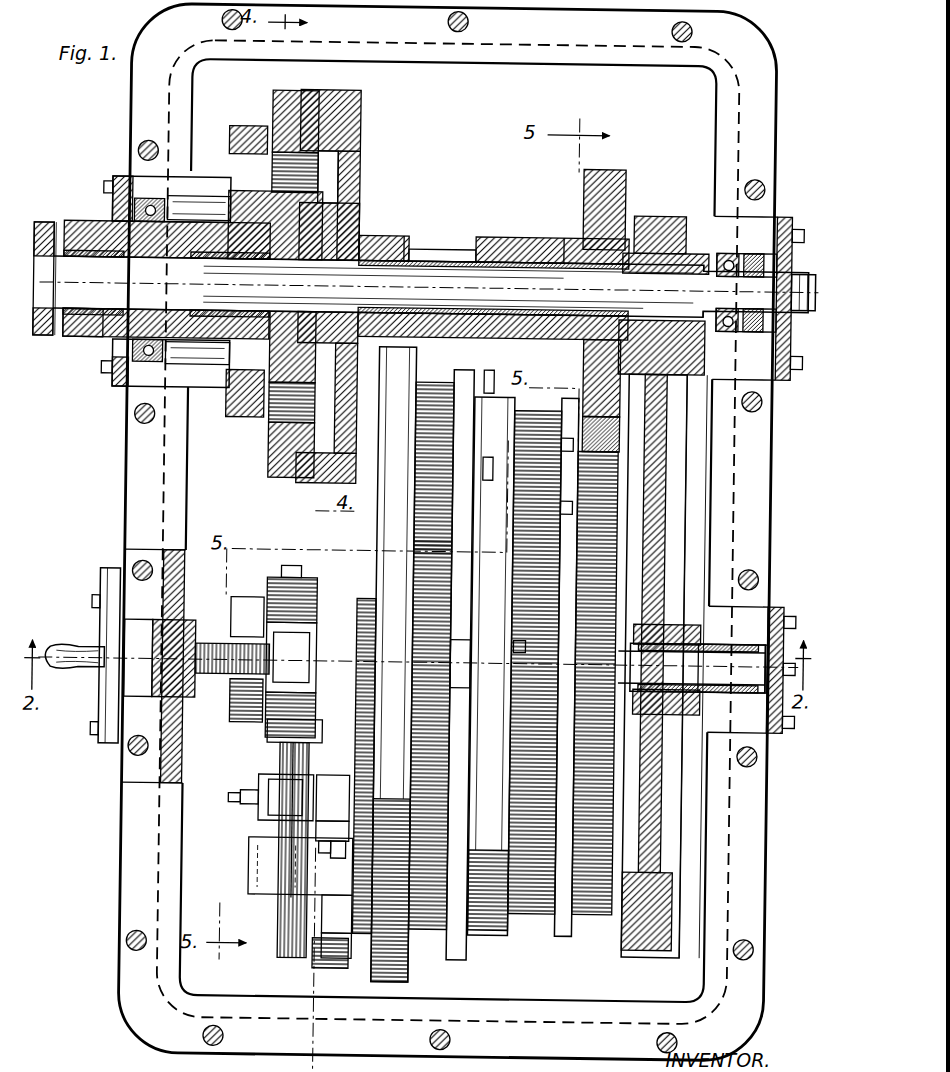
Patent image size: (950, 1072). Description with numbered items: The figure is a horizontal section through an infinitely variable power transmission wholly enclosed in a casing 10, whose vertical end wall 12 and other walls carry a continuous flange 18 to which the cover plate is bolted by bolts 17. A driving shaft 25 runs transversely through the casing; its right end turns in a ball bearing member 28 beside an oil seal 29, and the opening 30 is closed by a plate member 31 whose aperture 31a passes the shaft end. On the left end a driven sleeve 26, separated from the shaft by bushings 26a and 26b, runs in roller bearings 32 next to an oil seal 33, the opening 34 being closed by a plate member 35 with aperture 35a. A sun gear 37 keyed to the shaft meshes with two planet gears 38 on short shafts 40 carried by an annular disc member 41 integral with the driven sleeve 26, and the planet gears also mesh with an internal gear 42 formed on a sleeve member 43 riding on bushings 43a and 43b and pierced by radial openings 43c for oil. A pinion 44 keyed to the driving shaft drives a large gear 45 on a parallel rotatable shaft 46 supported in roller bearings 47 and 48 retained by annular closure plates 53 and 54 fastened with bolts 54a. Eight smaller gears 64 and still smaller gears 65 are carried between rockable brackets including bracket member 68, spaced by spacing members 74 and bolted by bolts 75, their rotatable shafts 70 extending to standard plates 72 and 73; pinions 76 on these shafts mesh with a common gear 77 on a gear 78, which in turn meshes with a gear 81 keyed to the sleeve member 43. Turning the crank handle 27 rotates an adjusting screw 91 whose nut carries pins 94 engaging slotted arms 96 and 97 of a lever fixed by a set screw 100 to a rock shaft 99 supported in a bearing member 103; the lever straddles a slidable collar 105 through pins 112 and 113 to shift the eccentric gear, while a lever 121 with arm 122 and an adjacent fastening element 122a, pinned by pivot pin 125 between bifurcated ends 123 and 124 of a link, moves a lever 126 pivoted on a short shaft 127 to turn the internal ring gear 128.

The casing 10 is at (109, 912).
The vertical end wall 12 is at (638, 67).
The bolts 17 is at (454, 33).
The flange 18 is at (760, 65).
The driving shaft 25 is at (48, 341).
The driven sleeve 26 is at (95, 344).
The bushing 26a is at (80, 343).
The bushing 26b is at (234, 378).
The crank handle 27 is at (62, 648).
The ball bearing member 28 is at (725, 258).
The oil seal 29 is at (745, 352).
The opening 30 is at (788, 232).
The plate member 31 is at (794, 270).
The aperture 31a is at (752, 328).
The roller bearings 32 is at (186, 364).
The oil seal 33 is at (108, 205).
The opening 34 is at (137, 201).
The plate member 35 is at (104, 188).
The aperture 35a is at (108, 380).
The sun gear 37 is at (334, 234).
The planet gears 38 is at (354, 131).
The short shafts 40 is at (288, 149).
The annular disc member 41 is at (234, 130).
The internal gear 42 is at (292, 94).
The sleeve member 43 is at (514, 237).
The bushing 43a is at (560, 237).
The bushing 43b is at (396, 237).
The radial openings 43c is at (440, 250).
The pinion 44 is at (692, 214).
The large gear 45 is at (690, 434).
The rotatable shaft 46 is at (190, 624).
The roller bearing 47 is at (108, 748).
The roller bearing 48 is at (722, 642).
The annular closure plate 53 is at (93, 733).
The annular closure plate 54 is at (780, 603).
The bolts 54a is at (792, 612).
The smaller gears 64 is at (416, 548).
The still smaller gears 65 is at (416, 512).
The rockable bracket member 68 is at (471, 960).
The rotatable shafts 70 is at (598, 914).
The standard plate 72 is at (360, 935).
The standard plate 73 is at (512, 928).
The spacing members 74 is at (416, 372).
The bolts 75 is at (452, 663).
The pinions 76 is at (538, 460).
The common gear 77 is at (522, 578).
The gear 78 is at (574, 430).
The gear 81 is at (623, 169).
The adjusting screw 91 is at (218, 678).
The pins 94 is at (292, 620).
The arm 96 is at (320, 700).
The arm 97 is at (270, 639).
The rock shaft 99 is at (272, 769).
The set screw 100 is at (284, 772).
The bearing member 103 is at (268, 897).
The slidable collar 105 is at (242, 726).
The pin 112 is at (294, 772).
The pin 113 is at (282, 572).
The lever 121 is at (270, 822).
The arm 122 is at (336, 782).
The screw 122a is at (266, 811).
The bifurcated end 123 is at (346, 786).
The bifurcated end 124 is at (324, 850).
The pivot pin 125 is at (340, 859).
The lever 126 is at (329, 940).
The short shaft 127 is at (327, 916).
The internal ring gear 128 is at (340, 979).